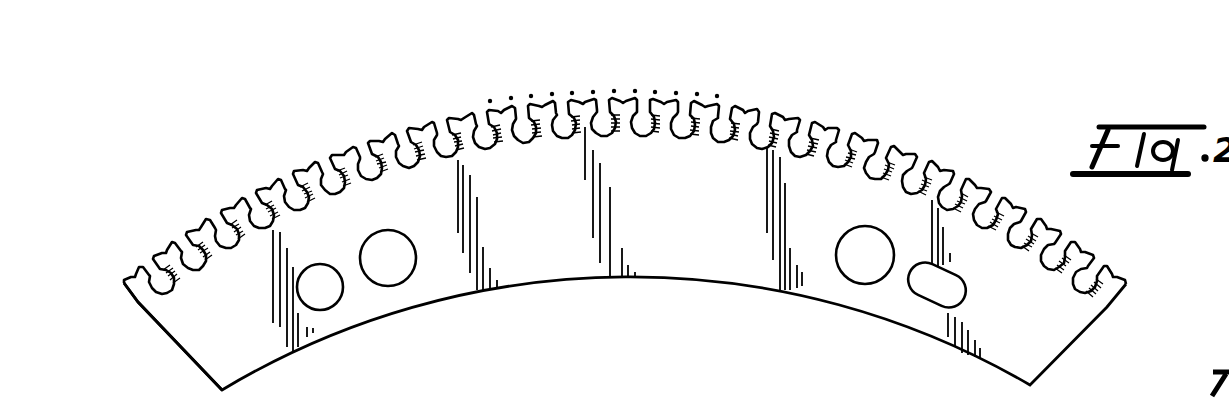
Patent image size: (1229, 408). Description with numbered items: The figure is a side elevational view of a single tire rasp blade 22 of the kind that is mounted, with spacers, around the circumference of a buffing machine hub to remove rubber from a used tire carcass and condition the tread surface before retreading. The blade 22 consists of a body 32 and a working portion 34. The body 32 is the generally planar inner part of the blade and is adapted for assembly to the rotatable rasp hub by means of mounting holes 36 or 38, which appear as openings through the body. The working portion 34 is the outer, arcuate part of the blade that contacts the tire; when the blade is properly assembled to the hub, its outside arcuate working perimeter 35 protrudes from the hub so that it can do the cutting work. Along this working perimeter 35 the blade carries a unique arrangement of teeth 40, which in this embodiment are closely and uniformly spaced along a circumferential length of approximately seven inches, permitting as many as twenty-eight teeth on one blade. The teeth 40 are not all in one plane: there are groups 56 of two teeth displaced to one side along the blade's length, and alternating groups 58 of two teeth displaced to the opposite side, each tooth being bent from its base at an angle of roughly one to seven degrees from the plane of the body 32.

The tire rasp blade 22 is at (688, 240).
The body 32 is at (213, 398).
The working portion 34 is at (107, 300).
The working perimeter 35 is at (916, 141).
The mounting hole 36 is at (395, 288).
The mounting hole 38 is at (332, 306).
The teeth 40 is at (503, 130).
The groups of two teeth 56 is at (243, 198).
The alternating groups of two teeth 58 is at (255, 192).